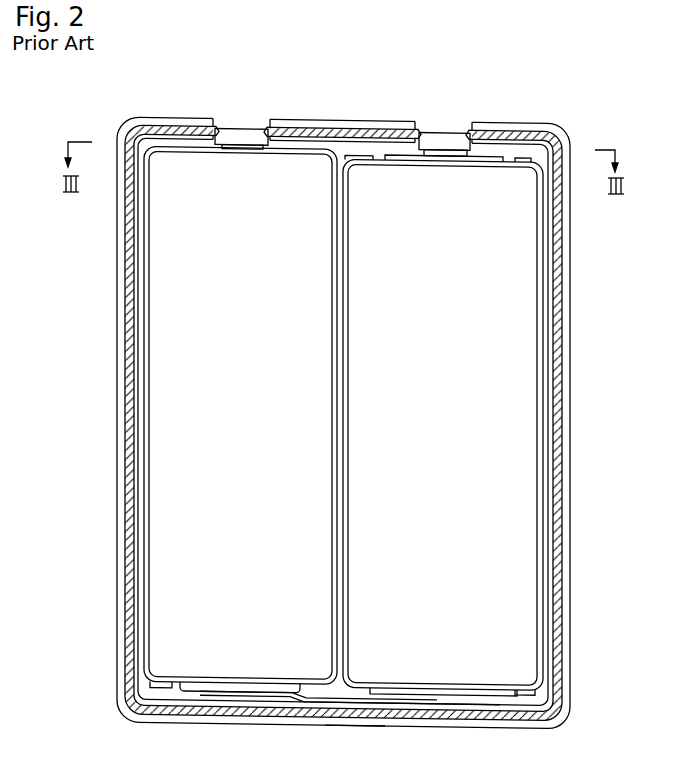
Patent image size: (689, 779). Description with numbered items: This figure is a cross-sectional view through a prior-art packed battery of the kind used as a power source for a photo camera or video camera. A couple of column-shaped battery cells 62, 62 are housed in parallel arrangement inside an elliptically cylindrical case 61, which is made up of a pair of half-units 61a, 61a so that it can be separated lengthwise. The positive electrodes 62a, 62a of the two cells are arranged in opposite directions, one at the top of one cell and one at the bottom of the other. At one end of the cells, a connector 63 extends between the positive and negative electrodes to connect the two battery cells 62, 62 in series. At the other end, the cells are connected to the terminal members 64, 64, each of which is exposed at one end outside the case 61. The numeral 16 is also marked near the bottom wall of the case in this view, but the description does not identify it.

The bottom wall of case 16 is at (355, 725).
The case 61 is at (571, 369).
The half-unit 61a is at (568, 307).
The battery cell 62 is at (178, 441).
The positive electrode 62a is at (493, 158).
The connector 63 is at (297, 694).
The terminal member 64 is at (237, 138).